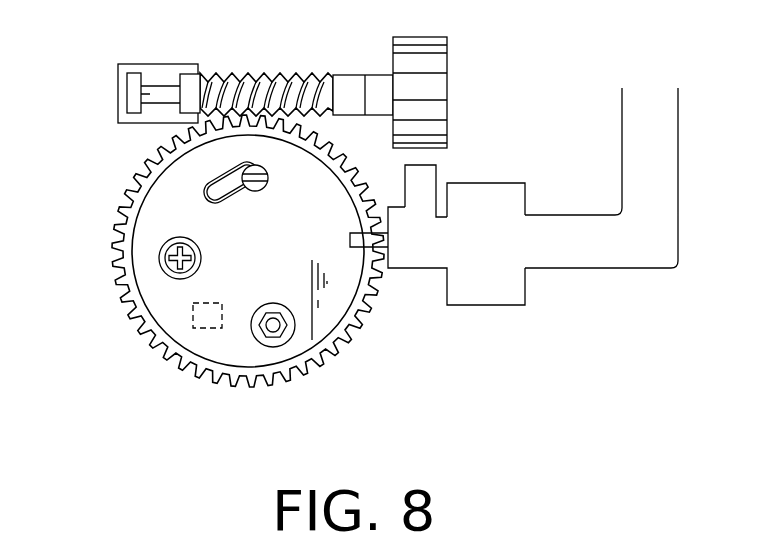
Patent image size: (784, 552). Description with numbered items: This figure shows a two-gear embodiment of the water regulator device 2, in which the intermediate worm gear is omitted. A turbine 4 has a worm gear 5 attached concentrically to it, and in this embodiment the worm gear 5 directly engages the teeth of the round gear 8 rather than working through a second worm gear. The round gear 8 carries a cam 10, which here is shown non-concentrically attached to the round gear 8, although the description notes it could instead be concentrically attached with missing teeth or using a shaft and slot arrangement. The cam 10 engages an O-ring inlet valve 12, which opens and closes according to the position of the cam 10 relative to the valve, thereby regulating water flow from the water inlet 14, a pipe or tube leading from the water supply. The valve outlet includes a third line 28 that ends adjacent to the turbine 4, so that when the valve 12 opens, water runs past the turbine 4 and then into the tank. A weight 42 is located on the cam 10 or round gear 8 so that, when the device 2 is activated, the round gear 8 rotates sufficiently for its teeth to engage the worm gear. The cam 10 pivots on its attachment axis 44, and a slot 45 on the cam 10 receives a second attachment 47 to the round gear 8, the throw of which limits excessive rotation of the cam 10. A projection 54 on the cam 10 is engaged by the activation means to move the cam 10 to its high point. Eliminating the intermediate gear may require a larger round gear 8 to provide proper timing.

The water regulator device 2 is at (96, 90).
The turbine 4 is at (432, 107).
The worm gear 5 is at (260, 75).
The round gear 8 is at (143, 337).
The cam 10 is at (148, 210).
The O-ring inlet valve 12 is at (475, 305).
The water inlet 14 is at (601, 178).
The third line 28 is at (437, 175).
The weight 42 is at (210, 328).
The attachment axis 44 is at (163, 270).
The slot 45 is at (223, 208).
The second attachment 47 is at (263, 185).
The projection 54 is at (263, 340).